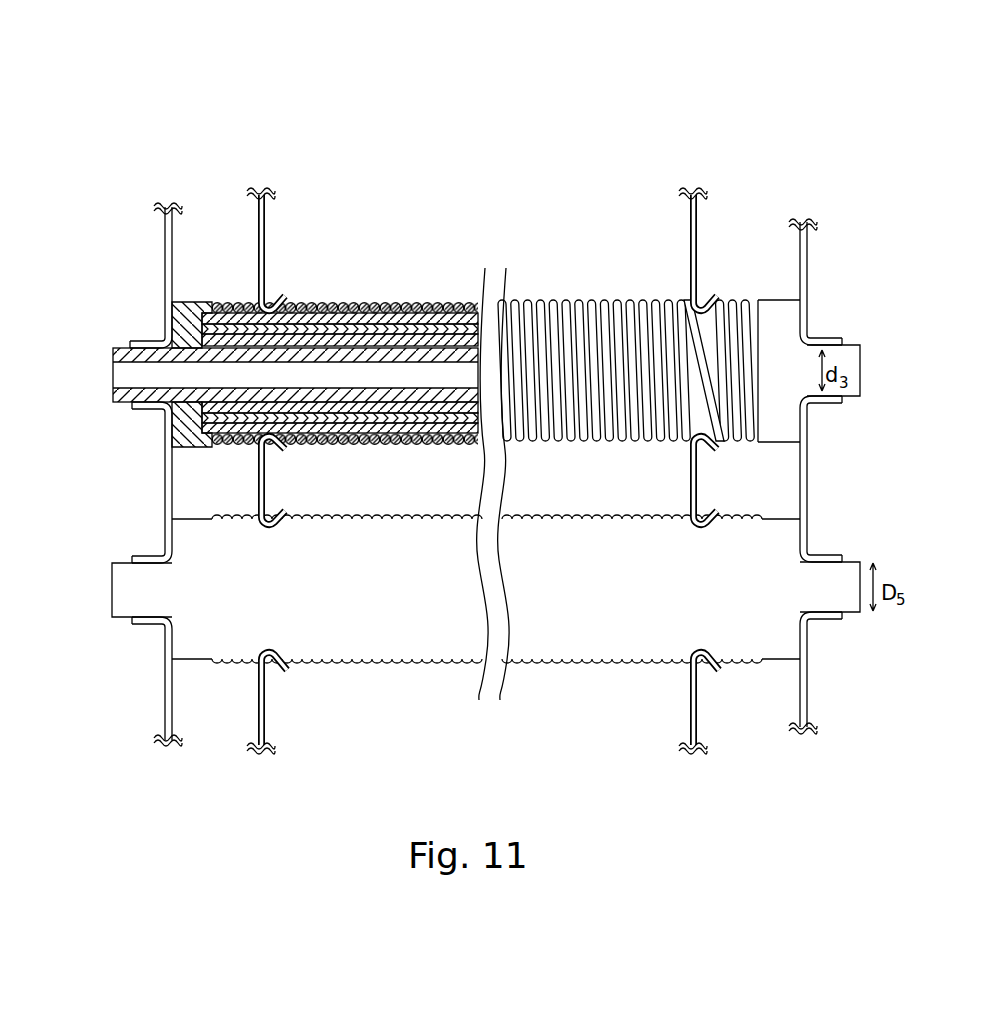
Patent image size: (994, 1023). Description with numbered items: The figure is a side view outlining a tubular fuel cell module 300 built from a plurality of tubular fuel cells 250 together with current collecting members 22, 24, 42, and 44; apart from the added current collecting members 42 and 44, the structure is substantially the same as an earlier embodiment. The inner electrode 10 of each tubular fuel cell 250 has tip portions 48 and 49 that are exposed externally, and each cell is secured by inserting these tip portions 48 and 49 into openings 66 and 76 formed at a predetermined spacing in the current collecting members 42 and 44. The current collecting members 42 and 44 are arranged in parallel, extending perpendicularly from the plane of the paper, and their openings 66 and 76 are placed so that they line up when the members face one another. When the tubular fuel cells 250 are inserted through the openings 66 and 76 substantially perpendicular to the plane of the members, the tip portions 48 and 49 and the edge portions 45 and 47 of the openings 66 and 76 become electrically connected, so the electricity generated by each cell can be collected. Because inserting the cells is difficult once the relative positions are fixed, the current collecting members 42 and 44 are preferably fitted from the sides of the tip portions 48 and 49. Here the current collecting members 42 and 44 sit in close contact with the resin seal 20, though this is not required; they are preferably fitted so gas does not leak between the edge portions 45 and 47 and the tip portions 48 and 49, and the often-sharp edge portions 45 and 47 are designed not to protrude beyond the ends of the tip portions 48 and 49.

The tubular fuel cell module 300 is at (566, 125).
The inner electrode 10 is at (110, 353).
The tip portion 48 is at (110, 373).
The tubular fuel cell 250 is at (391, 301).
The resin seal 20 is at (188, 310).
The current collecting member 22 is at (258, 235).
The current collecting member 24 is at (698, 230).
The current collecting member 42 is at (166, 264).
The current collecting member 44 is at (807, 279).
The edge portion 45 is at (153, 556).
The edge portion 47 is at (817, 556).
The tip portion 49 is at (861, 363).
The opening 66 is at (148, 596).
The opening 76 is at (832, 582).